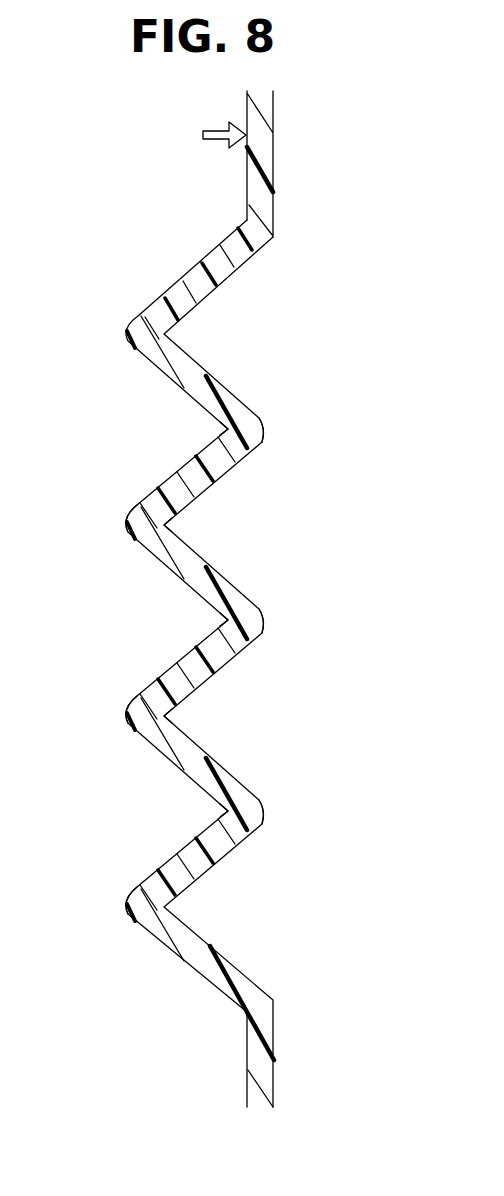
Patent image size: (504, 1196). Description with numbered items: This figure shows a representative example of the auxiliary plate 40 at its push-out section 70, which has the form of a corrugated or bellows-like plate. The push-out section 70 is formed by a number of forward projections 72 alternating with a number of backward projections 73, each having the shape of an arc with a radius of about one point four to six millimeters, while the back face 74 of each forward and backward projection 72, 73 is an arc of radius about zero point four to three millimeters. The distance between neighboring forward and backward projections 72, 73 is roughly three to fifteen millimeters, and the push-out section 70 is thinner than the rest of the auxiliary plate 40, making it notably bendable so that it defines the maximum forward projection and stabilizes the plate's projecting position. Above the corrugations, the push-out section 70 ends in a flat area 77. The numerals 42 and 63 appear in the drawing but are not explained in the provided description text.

The auxiliary plate 40 is at (200, 147).
The housing wall 42 is at (0, 133).
The sealing member 63 is at (10, 260).
The push-out section 70 is at (114, 334).
The forward projections 72 is at (125, 522).
The backward projections 73 is at (263, 432).
The back face 74 is at (226, 429).
The flat area 77 is at (247, 183).